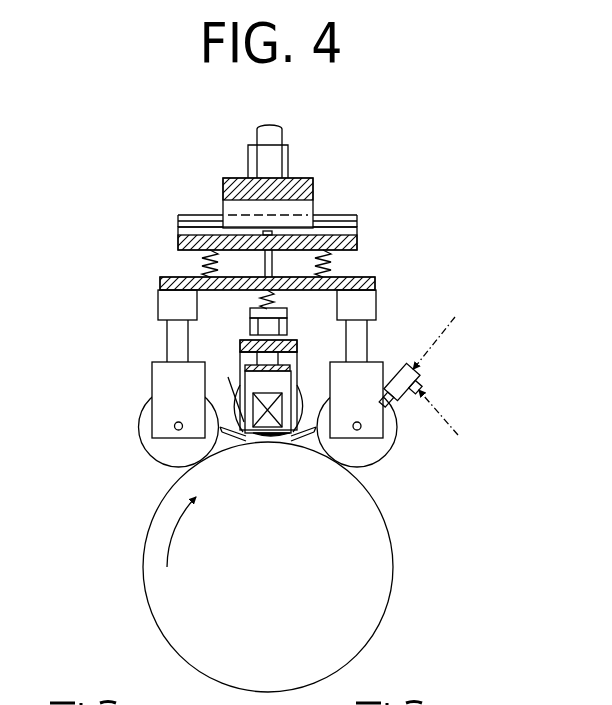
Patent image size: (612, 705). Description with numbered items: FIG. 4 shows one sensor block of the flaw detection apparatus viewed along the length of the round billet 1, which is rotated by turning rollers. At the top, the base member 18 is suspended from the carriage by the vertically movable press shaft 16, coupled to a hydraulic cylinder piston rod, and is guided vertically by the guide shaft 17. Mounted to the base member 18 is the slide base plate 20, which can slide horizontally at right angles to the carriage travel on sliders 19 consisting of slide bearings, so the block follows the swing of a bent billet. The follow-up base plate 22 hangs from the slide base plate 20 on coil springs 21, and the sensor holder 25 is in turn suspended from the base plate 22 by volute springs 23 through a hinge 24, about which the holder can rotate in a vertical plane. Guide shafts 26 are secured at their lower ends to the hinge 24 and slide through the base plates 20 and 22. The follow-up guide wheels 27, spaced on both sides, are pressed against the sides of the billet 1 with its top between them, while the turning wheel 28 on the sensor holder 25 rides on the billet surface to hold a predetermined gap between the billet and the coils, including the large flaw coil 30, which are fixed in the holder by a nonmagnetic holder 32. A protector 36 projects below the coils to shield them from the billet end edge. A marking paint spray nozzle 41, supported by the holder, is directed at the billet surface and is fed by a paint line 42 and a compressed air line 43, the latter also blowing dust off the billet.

The round billet 1 is at (393, 558).
The press shaft 16 is at (276, 131).
The guide shaft 17 is at (288, 156).
The base member 18 is at (305, 190).
The sliders 19 is at (350, 218).
The slide base plate 20 is at (350, 243).
The coil springs 21 is at (203, 265).
The follow-up base plate 22 is at (375, 283).
The springs 23 is at (273, 300).
The hinge 24 is at (272, 328).
The sensor holder 25 is at (294, 345).
The guide shafts 26 is at (265, 263).
The follow-up guide wheels 27 is at (157, 452).
The turning wheel 28 is at (291, 395).
The eddy-current flaw detection coil 30 is at (266, 440).
The holder 32 is at (288, 438).
The protector 36 is at (228, 388).
The marking paint spray nozzle 41 is at (397, 368).
The paint line 42 is at (446, 332).
The compressed air line 43 is at (452, 427).